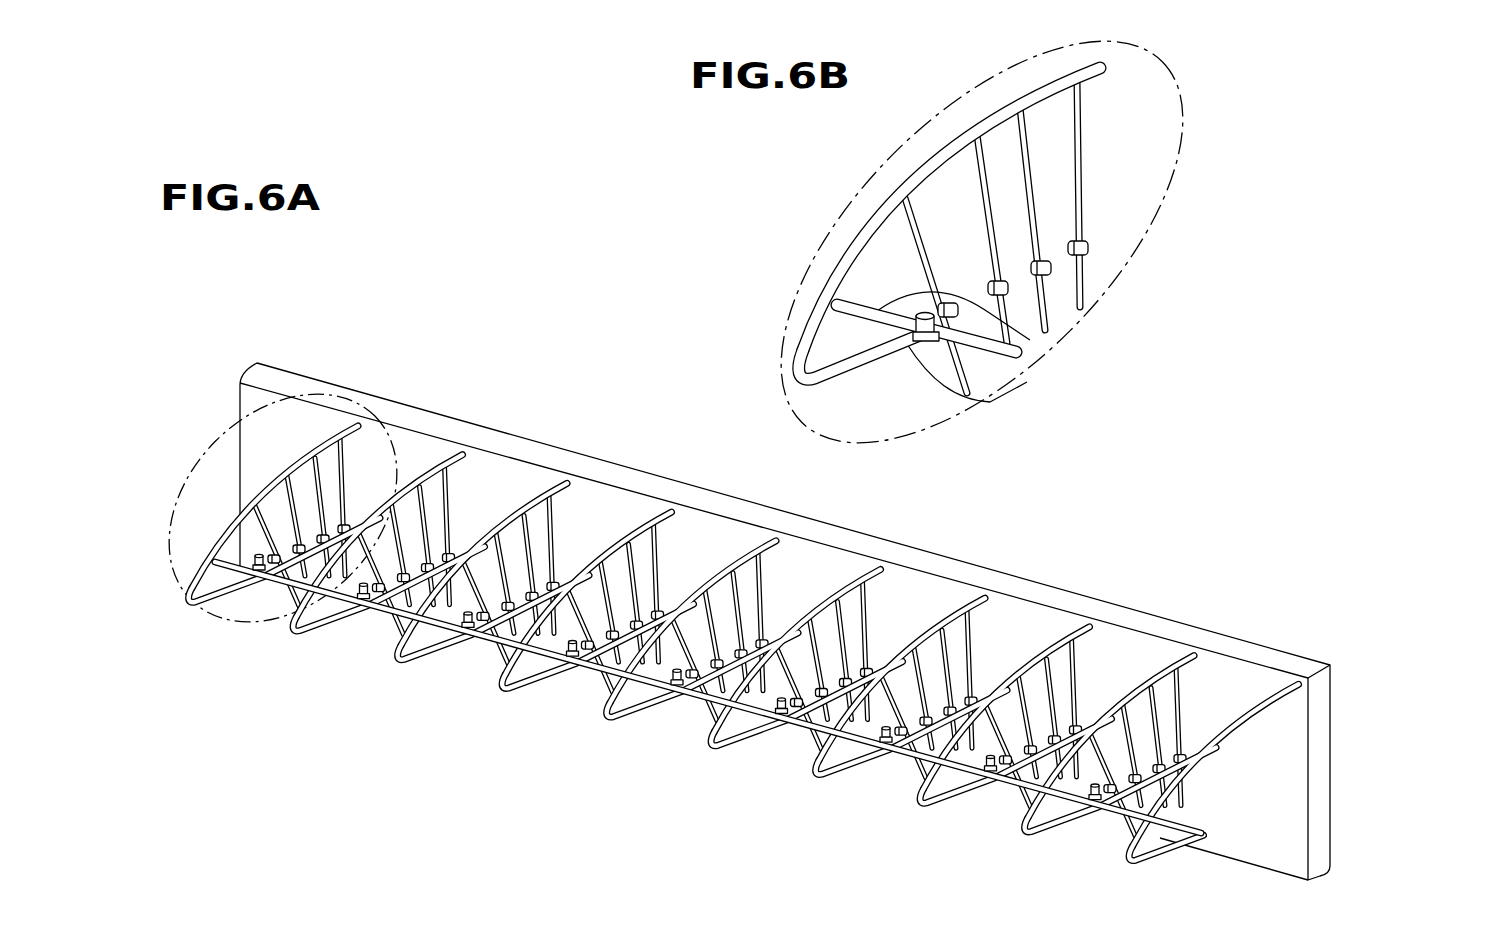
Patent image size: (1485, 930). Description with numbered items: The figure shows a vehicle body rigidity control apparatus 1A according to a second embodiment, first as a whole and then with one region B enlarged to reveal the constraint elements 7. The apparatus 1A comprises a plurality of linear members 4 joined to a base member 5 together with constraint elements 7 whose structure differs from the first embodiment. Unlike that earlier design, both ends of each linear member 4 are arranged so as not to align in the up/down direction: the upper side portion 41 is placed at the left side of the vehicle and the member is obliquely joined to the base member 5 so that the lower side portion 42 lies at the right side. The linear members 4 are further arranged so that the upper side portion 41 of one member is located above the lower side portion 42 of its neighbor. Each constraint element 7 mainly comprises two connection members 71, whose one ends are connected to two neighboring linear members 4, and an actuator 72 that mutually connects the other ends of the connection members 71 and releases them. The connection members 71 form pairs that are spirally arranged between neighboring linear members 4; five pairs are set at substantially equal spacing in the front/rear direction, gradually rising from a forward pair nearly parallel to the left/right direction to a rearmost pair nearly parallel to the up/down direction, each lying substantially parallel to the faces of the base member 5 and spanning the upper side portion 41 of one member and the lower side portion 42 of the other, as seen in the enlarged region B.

In FIG. 6A, the vehicle body rigidity control apparatus 1A is at (245, 340).
In FIG. 6A, the linear member 4 is at (183, 605).
In FIG. 6B, the linear member 4 is at (800, 372).
In FIG. 6A, the upper side portion 41 is at (335, 443).
In FIG. 6B, the upper side portion 41 is at (948, 186).
In FIG. 6A, the lower side portion 42 is at (200, 600).
In FIG. 6B, the lower side portion 42 is at (858, 352).
In FIG. 6A, the base member 5 is at (1012, 588).
In FIG. 6A, the constraint element 7 is at (268, 527).
In FIG. 6B, the constraint element 7 is at (1085, 228).
In FIG. 6A, the connection member 71 is at (233, 568).
In FIG. 6B, the connection member 71 is at (1020, 350).
In FIG. 6A, the actuator 72 is at (245, 585).
In FIG. 6B, the actuator 72 is at (957, 392).
In FIG. 6A, the detail region B is at (224, 488).
In FIG. 6B, the detail region B is at (858, 213).